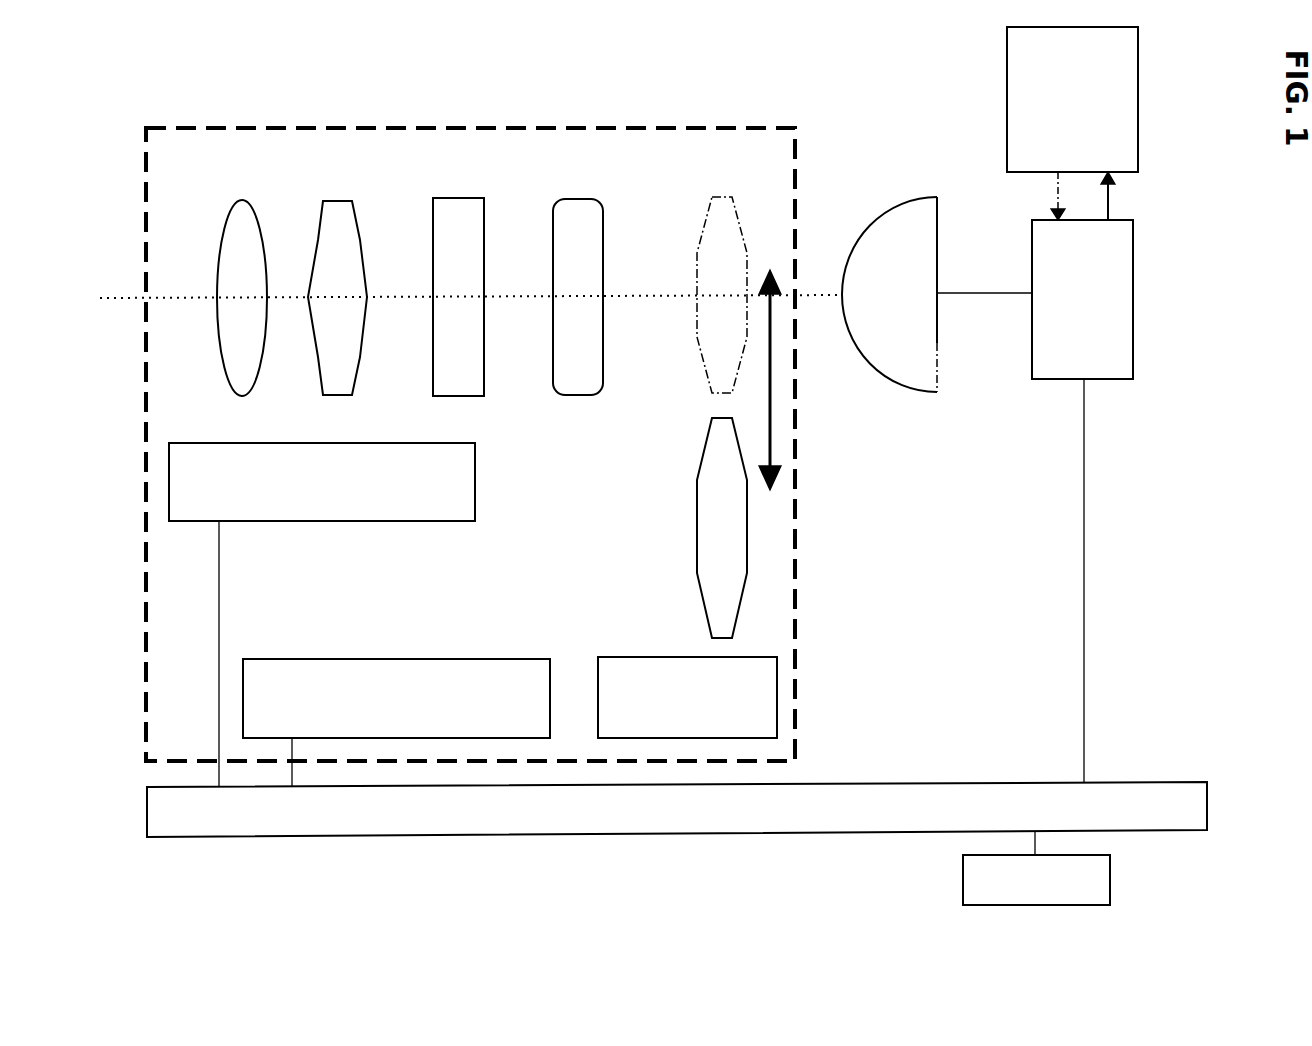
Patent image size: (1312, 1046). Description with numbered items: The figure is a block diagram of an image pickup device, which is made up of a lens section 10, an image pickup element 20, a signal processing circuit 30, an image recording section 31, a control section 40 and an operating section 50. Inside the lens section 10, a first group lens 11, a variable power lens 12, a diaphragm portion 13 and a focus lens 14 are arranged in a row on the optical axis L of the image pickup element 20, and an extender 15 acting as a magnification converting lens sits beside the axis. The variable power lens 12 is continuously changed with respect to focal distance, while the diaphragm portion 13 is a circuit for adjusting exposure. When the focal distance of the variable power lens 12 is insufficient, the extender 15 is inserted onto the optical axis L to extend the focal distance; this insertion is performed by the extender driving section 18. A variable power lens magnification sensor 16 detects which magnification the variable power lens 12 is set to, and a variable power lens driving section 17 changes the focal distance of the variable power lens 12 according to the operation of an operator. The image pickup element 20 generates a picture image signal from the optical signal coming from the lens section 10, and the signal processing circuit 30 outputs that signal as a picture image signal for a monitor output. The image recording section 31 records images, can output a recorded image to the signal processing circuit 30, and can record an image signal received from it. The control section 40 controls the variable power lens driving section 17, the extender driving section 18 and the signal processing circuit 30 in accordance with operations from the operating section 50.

The optical axis L is at (170, 298).
The lens section 10 is at (795, 148).
The first group lens 11 is at (227, 222).
The variable power lens 12 is at (325, 199).
The diaphragm portion 13 is at (460, 198).
The focus lens 14 is at (562, 198).
The extender 15 is at (747, 222).
The variable power lens magnification sensor 16 is at (167, 472).
The variable power lens driving section 17 is at (242, 700).
The extender driving section 18 is at (777, 690).
The image pickup element 20 is at (938, 213).
The signal processing circuit 30 is at (1135, 267).
The image recording section 31 is at (1142, 142).
The control section 40 is at (1137, 780).
The operating section 50 is at (1113, 877).